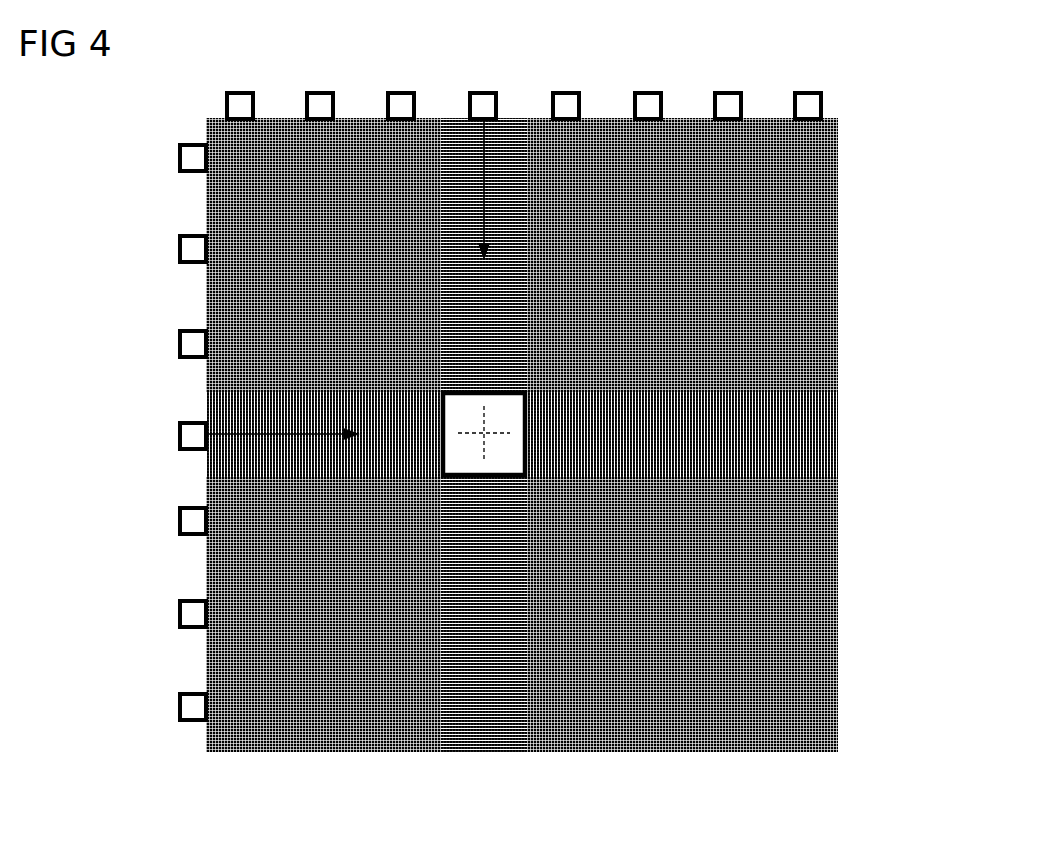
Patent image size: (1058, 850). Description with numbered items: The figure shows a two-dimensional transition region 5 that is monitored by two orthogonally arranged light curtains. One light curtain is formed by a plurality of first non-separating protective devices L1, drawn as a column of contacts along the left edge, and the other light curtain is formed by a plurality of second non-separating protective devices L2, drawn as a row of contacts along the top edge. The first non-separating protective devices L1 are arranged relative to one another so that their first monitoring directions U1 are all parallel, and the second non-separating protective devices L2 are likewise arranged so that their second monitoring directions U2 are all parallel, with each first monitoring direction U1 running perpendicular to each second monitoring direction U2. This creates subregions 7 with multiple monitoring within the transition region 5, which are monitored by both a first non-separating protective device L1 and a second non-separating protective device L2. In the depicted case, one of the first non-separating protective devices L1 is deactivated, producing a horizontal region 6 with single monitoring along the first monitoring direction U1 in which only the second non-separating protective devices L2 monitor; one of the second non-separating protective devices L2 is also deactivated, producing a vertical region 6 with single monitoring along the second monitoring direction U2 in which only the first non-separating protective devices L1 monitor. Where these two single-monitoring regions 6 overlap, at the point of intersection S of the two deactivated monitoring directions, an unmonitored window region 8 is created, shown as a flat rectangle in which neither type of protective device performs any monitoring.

The transition region 5 is at (497, 389).
The region with single monitoring 6 is at (815, 440).
The subregions with multiple monitoring 7 is at (230, 203).
The unmonitored window region 8 is at (441, 449).
The point of intersection S is at (486, 431).
The first non-separating protective devices L1 is at (178, 338).
The second non-separating protective devices L2 is at (483, 90).
The first monitoring direction U1 is at (258, 432).
The second monitoring direction U2 is at (486, 147).